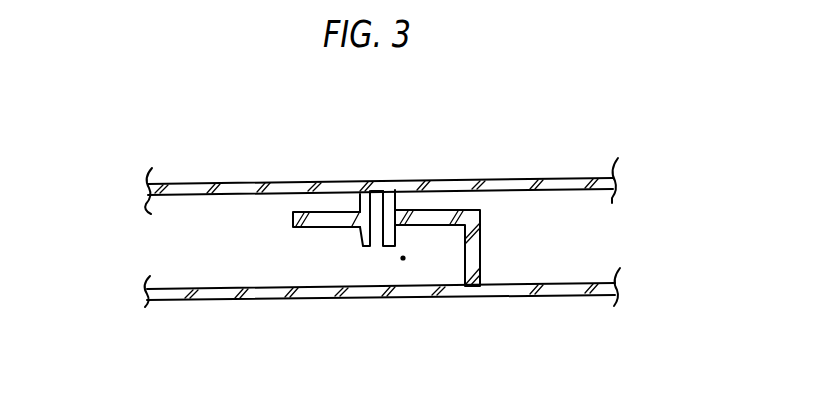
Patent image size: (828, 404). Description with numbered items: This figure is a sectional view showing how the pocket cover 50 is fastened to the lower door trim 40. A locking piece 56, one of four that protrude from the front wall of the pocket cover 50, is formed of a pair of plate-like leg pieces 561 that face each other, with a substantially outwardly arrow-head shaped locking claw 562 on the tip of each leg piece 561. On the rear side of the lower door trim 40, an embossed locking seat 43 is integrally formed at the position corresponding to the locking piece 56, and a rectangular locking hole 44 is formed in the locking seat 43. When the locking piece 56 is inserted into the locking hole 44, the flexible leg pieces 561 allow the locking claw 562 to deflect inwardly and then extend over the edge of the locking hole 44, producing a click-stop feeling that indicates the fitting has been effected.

The pocket cover 50 is at (512, 178).
The lower door trim 40 is at (520, 300).
The locking hole 44 is at (353, 211).
The leg piece 561 is at (393, 182).
The locking claw 562 is at (357, 232).
The locking piece 56 is at (396, 240).
The locking seat 43 is at (481, 238).